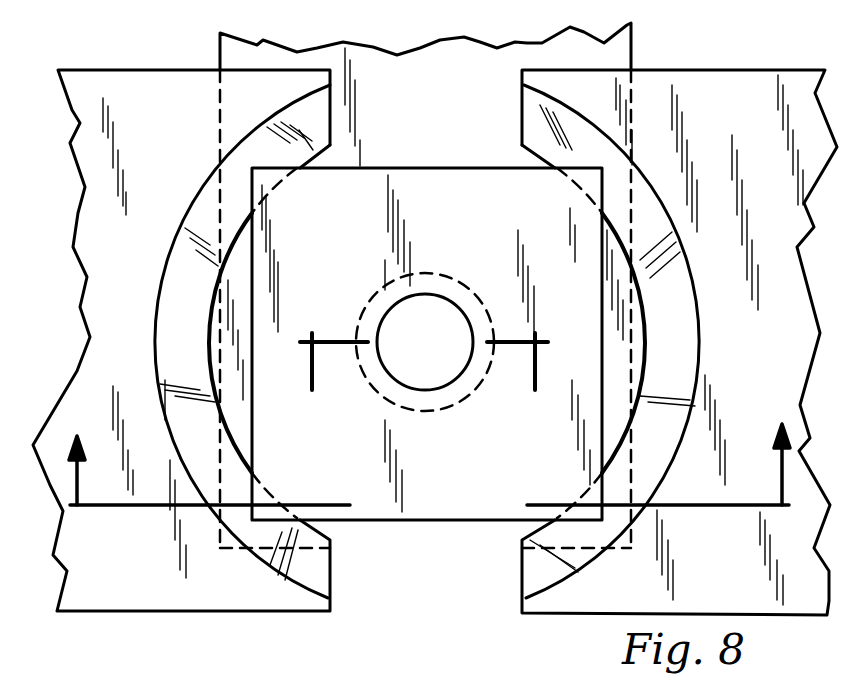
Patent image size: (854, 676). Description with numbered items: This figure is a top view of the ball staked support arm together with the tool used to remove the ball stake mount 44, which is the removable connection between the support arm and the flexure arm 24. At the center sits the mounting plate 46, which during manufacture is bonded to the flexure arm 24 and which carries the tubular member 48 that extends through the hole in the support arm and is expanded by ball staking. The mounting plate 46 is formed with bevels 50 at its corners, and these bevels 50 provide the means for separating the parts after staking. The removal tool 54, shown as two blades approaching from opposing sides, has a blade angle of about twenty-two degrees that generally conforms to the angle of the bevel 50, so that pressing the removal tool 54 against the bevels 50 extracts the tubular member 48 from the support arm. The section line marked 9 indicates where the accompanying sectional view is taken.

The flexure arm 24 is at (353, 90).
The ball stake mount 44 is at (381, 135).
The mounting plate 46 is at (480, 185).
The tubular member 48 is at (380, 287).
The bevel 50 is at (262, 180).
The removal tool 54 is at (123, 117).
The section line 9- 9 is at (429, 443).